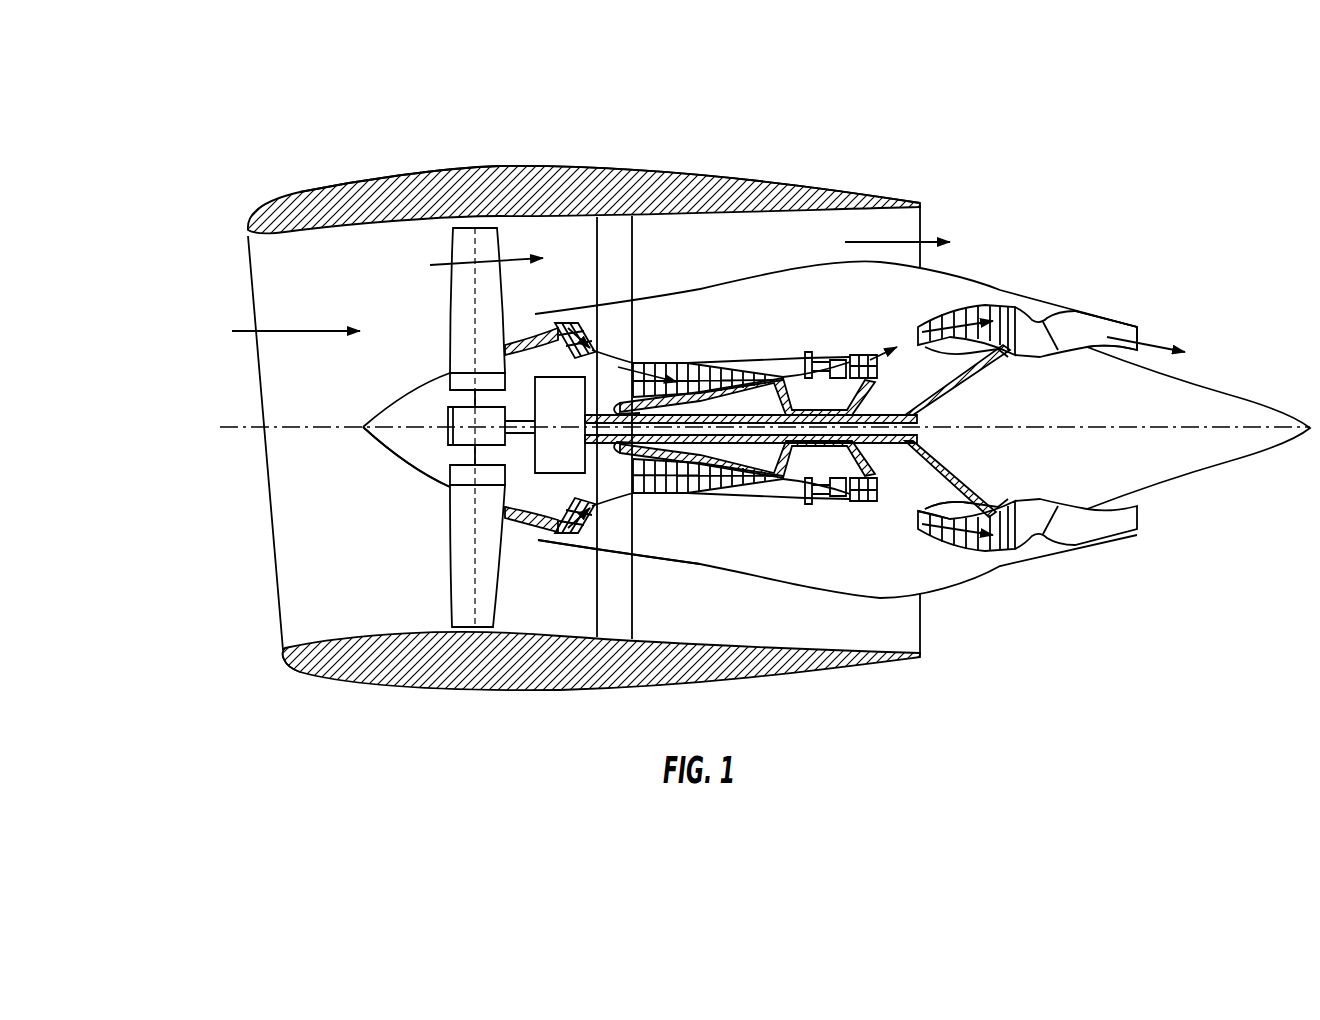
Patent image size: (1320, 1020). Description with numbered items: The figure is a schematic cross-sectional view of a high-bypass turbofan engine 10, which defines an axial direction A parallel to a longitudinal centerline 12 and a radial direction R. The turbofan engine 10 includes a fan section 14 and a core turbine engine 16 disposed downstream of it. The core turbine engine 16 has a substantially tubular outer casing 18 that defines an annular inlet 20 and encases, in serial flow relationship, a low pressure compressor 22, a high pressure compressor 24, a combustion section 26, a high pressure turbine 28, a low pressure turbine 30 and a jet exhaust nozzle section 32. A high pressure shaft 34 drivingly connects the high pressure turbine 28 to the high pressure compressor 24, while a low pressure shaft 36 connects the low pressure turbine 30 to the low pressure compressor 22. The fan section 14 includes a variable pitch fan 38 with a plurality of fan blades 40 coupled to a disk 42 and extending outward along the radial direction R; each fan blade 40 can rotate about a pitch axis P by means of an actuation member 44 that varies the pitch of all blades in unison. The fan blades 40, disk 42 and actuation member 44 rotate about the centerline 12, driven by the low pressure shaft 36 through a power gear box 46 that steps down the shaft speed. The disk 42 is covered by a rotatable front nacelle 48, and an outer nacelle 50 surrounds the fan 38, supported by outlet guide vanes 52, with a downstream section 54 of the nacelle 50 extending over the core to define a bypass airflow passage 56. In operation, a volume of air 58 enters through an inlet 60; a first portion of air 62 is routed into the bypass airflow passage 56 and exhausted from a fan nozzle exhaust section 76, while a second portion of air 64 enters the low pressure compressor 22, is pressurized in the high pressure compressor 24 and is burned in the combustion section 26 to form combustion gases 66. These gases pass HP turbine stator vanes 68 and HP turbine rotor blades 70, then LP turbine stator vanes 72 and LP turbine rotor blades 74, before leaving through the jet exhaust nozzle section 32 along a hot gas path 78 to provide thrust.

The turbofan engine 10 is at (1057, 183).
The longitudinal centerline 12 is at (1080, 430).
The fan section 14 is at (492, 133).
The core turbine engine 16 is at (797, 323).
The outer casing 18 is at (780, 588).
The annular inlet 20 is at (546, 530).
The low pressure compressor 22 is at (597, 502).
The high pressure compressor 24 is at (658, 478).
The combustion section 26 is at (822, 492).
The high pressure turbine 28 is at (962, 488).
The low pressure turbine 30 is at (998, 550).
The jet exhaust nozzle section 32 is at (1058, 534).
The high pressure shaft 34 is at (872, 384).
The low pressure shaft 36 is at (950, 395).
The variable pitch fan 38 is at (418, 477).
The fan blades 40 is at (450, 567).
The disk 42 is at (470, 385).
The actuation member 44 is at (447, 413).
The power gear box 46 is at (577, 403).
The front nacelle 48 is at (385, 447).
The outer nacelle 50 is at (474, 700).
The outlet guide vanes 52 is at (633, 247).
The downstream section 54 is at (852, 188).
The bypass airflow passage 56 is at (752, 262).
The volume of air 58 is at (300, 332).
The inlet 60 is at (282, 660).
The first portion of air 62 is at (467, 253).
The second portion of air 64 is at (530, 322).
The combustion gases 66 is at (962, 310).
The HP turbine stator vanes 68 is at (838, 498).
The HP turbine rotor blades 70 is at (892, 497).
The LP turbine stator vanes 72 is at (925, 535).
The LP turbine rotor blades 74 is at (937, 542).
The fan nozzle exhaust section 76 is at (912, 227).
The hot gas path 78 is at (908, 340).
The pitch axis P is at (483, 248).
The radial direction R is at (125, 292).
The axial direction A is at (813, 853).